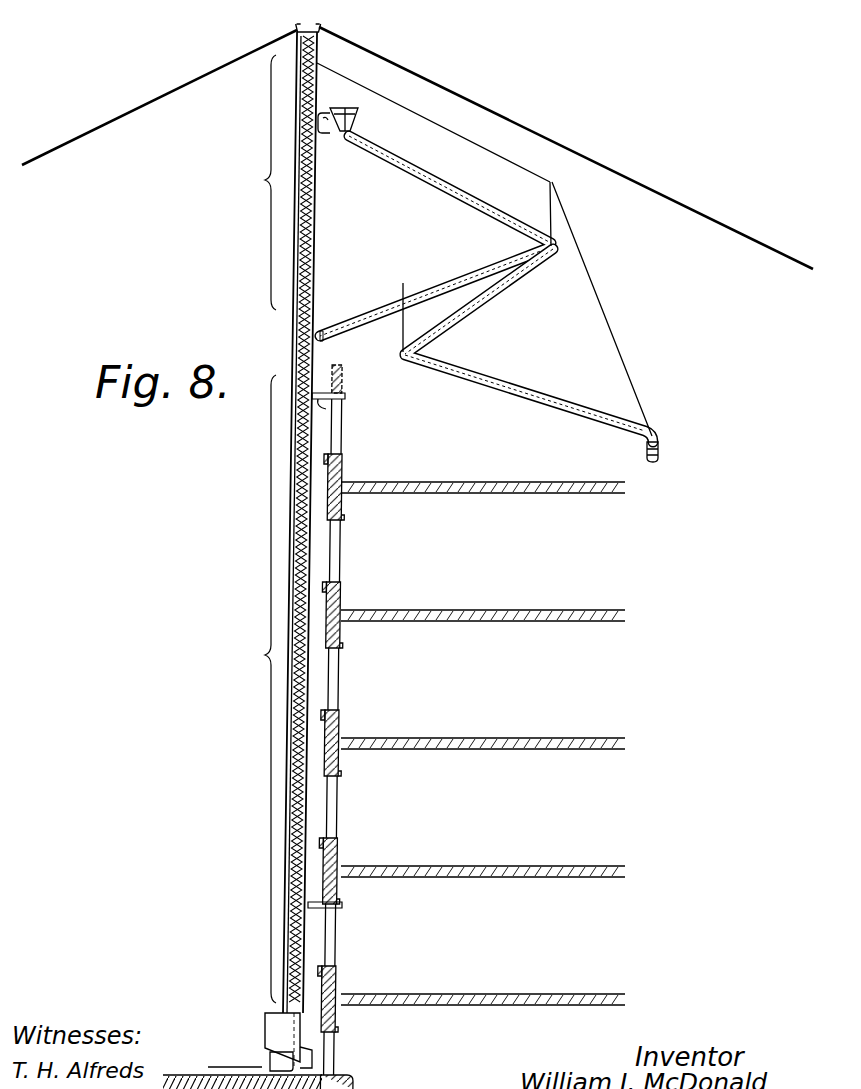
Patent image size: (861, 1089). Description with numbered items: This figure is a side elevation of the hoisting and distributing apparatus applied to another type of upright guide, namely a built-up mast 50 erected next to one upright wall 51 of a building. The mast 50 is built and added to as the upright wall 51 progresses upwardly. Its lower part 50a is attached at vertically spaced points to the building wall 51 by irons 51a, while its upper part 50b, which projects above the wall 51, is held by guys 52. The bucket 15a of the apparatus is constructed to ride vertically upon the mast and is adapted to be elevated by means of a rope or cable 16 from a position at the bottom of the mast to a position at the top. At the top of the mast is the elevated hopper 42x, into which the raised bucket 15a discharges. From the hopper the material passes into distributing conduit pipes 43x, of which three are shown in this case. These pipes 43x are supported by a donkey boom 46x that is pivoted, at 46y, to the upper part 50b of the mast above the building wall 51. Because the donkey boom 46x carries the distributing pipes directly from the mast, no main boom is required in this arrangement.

The guys 52 is at (91, 132).
The elevated hopper 42x is at (359, 122).
The donkey boom 46x is at (438, 256).
The pivot of donkey boom 46y is at (326, 328).
The distributing conduit pipes 43x is at (488, 288).
The mast 50 is at (291, 347).
The lower part of mast 50a is at (248, 689).
The upper part of mast 50b is at (248, 182).
The upright wall of the building 51 is at (350, 727).
The irons 51a is at (340, 404).
The bucket 15a is at (261, 1021).
The rope or cable 16 is at (240, 1068).